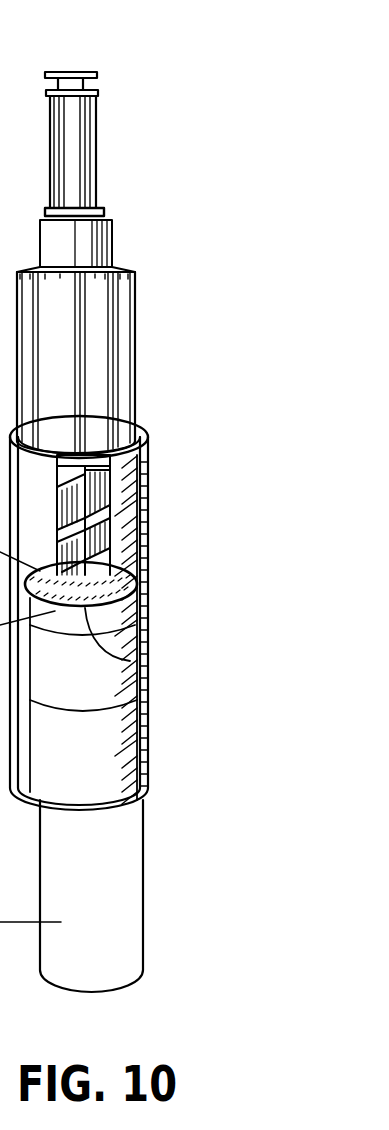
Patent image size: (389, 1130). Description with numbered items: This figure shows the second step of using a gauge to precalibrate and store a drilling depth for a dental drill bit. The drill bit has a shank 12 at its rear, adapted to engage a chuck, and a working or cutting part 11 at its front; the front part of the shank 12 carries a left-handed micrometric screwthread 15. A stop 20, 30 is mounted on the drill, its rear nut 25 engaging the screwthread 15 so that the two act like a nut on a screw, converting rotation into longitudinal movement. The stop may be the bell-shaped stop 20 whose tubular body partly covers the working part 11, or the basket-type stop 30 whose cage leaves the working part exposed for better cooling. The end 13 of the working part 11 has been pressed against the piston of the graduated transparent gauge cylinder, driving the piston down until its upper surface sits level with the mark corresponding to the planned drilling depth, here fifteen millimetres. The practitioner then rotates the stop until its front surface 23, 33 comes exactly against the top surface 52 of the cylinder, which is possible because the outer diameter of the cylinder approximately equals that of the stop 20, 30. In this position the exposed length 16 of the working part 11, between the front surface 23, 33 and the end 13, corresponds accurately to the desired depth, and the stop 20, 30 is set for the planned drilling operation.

The shank 12 is at (83, 113).
The screwthread 15 is at (107, 213).
The nut 25 is at (85, 245).
The movable stop 20 is at (143, 360).
The stop with basket structure 30 is at (140, 367).
The front surface of the stop 23 is at (141, 420).
The front surface of the basket stop 33 is at (143, 453).
The top surface of the cylinder 52 is at (140, 475).
The active or cutting part 11 is at (165, 522).
The exposed length of the working part 16 is at (100, 498).
The end part of the working part 13 is at (136, 596).